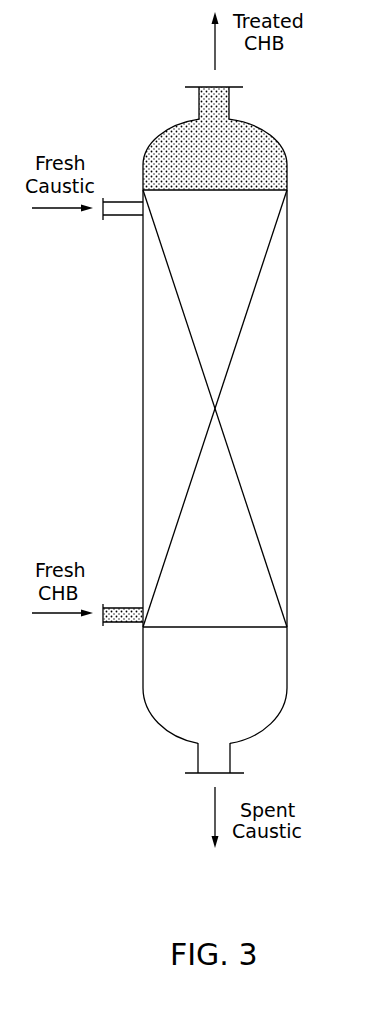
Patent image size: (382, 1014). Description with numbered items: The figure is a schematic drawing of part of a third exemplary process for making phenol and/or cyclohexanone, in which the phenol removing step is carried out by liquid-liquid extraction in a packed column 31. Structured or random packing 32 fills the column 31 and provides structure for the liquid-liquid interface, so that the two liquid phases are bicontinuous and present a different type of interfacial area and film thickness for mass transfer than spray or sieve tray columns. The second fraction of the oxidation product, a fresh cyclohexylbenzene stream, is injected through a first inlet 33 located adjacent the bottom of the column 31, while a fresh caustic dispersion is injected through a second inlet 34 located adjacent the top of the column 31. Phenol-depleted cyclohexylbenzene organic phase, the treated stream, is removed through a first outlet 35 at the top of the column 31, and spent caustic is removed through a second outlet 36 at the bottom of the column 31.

The packed column 31 is at (142, 450).
The structured or random packing 32 is at (252, 390).
The first inlet 33 is at (120, 623).
The second inlet 34 is at (123, 216).
The first outlet 35 is at (205, 86).
The second outlet 36 is at (198, 752).